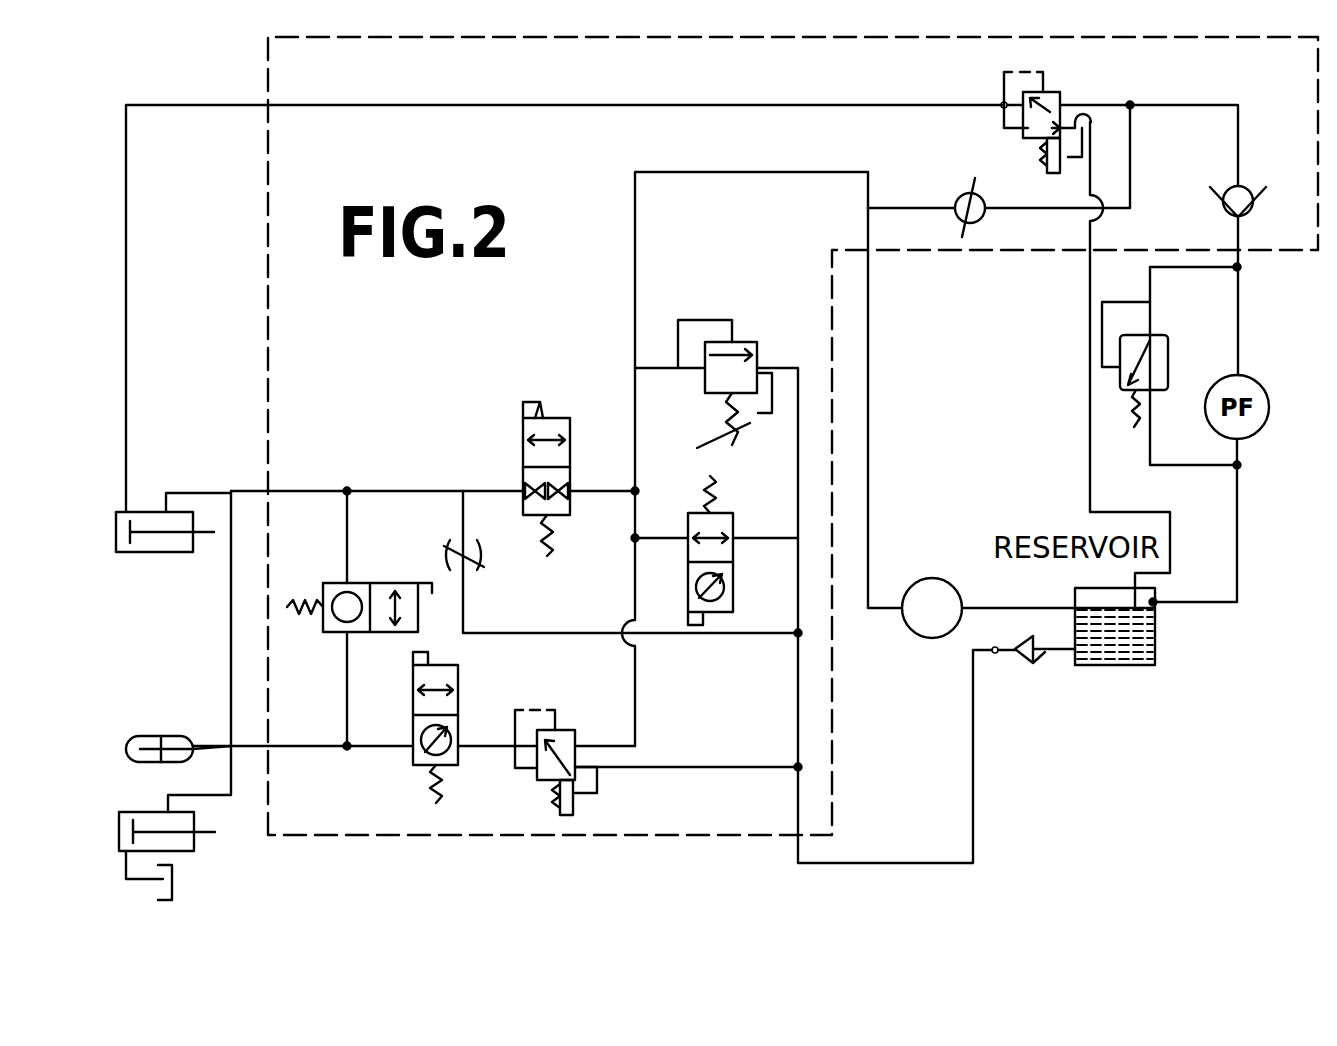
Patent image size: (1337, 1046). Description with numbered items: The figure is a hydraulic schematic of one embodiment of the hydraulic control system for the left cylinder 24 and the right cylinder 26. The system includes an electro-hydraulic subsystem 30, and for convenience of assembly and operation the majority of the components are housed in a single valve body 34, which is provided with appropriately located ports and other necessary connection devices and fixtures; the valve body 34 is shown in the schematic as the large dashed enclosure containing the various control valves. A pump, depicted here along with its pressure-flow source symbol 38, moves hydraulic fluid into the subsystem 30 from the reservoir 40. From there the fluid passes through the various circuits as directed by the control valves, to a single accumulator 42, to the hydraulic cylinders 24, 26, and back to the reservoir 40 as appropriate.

The left cylinder 24 is at (196, 840).
The right cylinder 26 is at (151, 553).
The electro-hydraulic subsystem 30 is at (500, 402).
The valve body 34 is at (658, 836).
The pressure/flow source (pump) 38 is at (931, 638).
The reservoir 40 is at (1131, 666).
The accumulator 42 is at (168, 736).